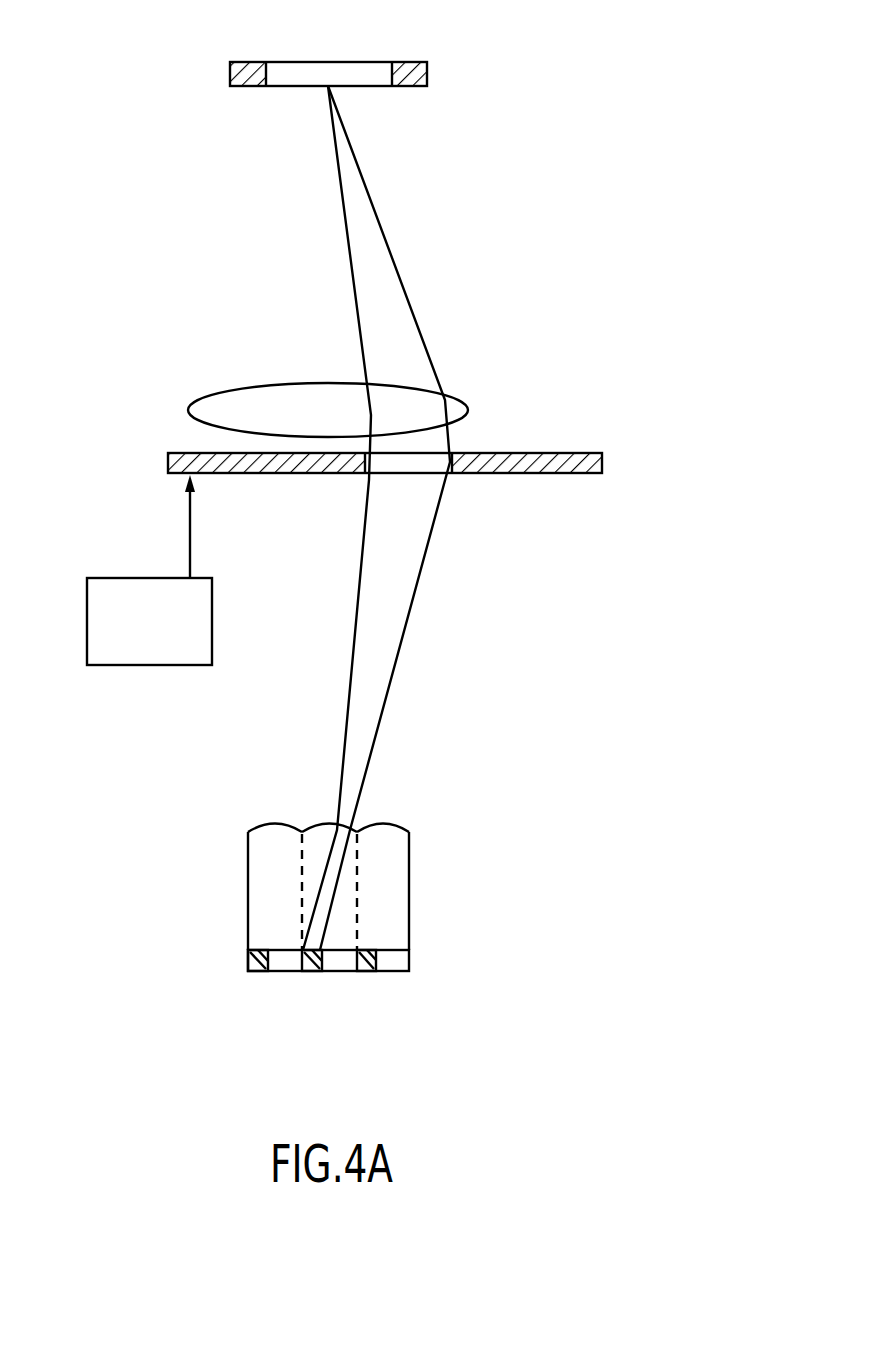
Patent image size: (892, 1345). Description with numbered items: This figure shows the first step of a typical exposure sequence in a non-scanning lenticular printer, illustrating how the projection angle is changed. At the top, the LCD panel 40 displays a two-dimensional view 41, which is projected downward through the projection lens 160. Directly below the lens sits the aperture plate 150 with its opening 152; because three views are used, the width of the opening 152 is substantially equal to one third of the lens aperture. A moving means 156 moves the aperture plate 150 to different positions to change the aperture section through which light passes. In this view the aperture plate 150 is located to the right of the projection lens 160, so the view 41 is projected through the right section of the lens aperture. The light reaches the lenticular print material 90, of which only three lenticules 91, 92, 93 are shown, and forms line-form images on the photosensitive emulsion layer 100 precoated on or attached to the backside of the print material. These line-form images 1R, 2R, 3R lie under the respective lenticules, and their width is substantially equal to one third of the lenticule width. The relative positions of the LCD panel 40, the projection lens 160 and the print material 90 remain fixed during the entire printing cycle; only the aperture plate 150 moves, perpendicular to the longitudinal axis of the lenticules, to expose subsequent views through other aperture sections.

The LCD panel 40 is at (412, 80).
The 2D view 41 is at (337, 72).
The projection lens 160 is at (220, 405).
The aperture plate 150 is at (583, 458).
The opening 152 is at (426, 478).
The moving means 156 is at (178, 655).
The lenticular print material 90 is at (328, 859).
The lenticule 91 is at (282, 830).
The lenticule 92 is at (345, 832).
The lenticule 93 is at (397, 835).
The photosensitive emulsion layer 100 is at (357, 990).
The line-form image 1R is at (258, 972).
The line-form image 2R is at (310, 972).
The line-form image 3R is at (365, 972).